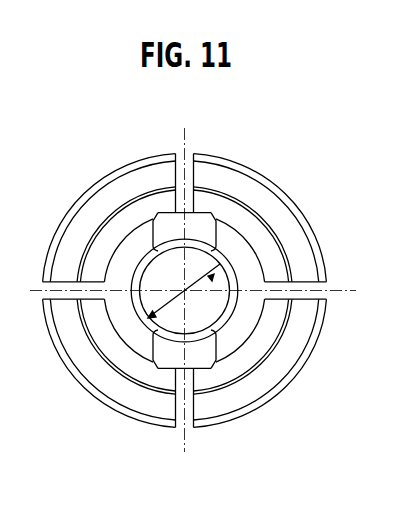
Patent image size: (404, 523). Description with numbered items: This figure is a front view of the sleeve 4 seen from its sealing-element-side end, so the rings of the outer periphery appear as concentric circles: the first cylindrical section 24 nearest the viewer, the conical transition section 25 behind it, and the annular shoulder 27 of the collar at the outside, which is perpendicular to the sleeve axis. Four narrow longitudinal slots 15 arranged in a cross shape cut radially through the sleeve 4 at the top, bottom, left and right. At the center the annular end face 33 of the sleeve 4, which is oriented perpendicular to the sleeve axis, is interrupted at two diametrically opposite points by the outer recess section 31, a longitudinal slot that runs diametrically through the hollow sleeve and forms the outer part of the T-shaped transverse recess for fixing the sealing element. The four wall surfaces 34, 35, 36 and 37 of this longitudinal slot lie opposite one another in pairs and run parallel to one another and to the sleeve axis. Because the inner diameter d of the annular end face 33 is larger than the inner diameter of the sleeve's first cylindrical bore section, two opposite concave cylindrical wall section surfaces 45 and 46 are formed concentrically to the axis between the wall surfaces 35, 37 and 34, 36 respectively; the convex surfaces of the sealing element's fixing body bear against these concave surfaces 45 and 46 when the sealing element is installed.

The sleeve 4 is at (316, 222).
The longitudinal slots 15 is at (322, 289).
The first cylindrical section 24 is at (132, 348).
The conical transition section 25 is at (248, 233).
The annular shoulder 27 is at (253, 387).
The outer recess section 31 is at (193, 244).
The annular end face 33 is at (140, 238).
The wall surface 34 is at (161, 212).
The wall surface 35 is at (214, 212).
The wall surface 36 is at (165, 355).
The wall surface 37 is at (210, 363).
The concave cylindrical wall section surface 45 is at (142, 262).
The concave cylindrical wall section surface 46 is at (220, 264).